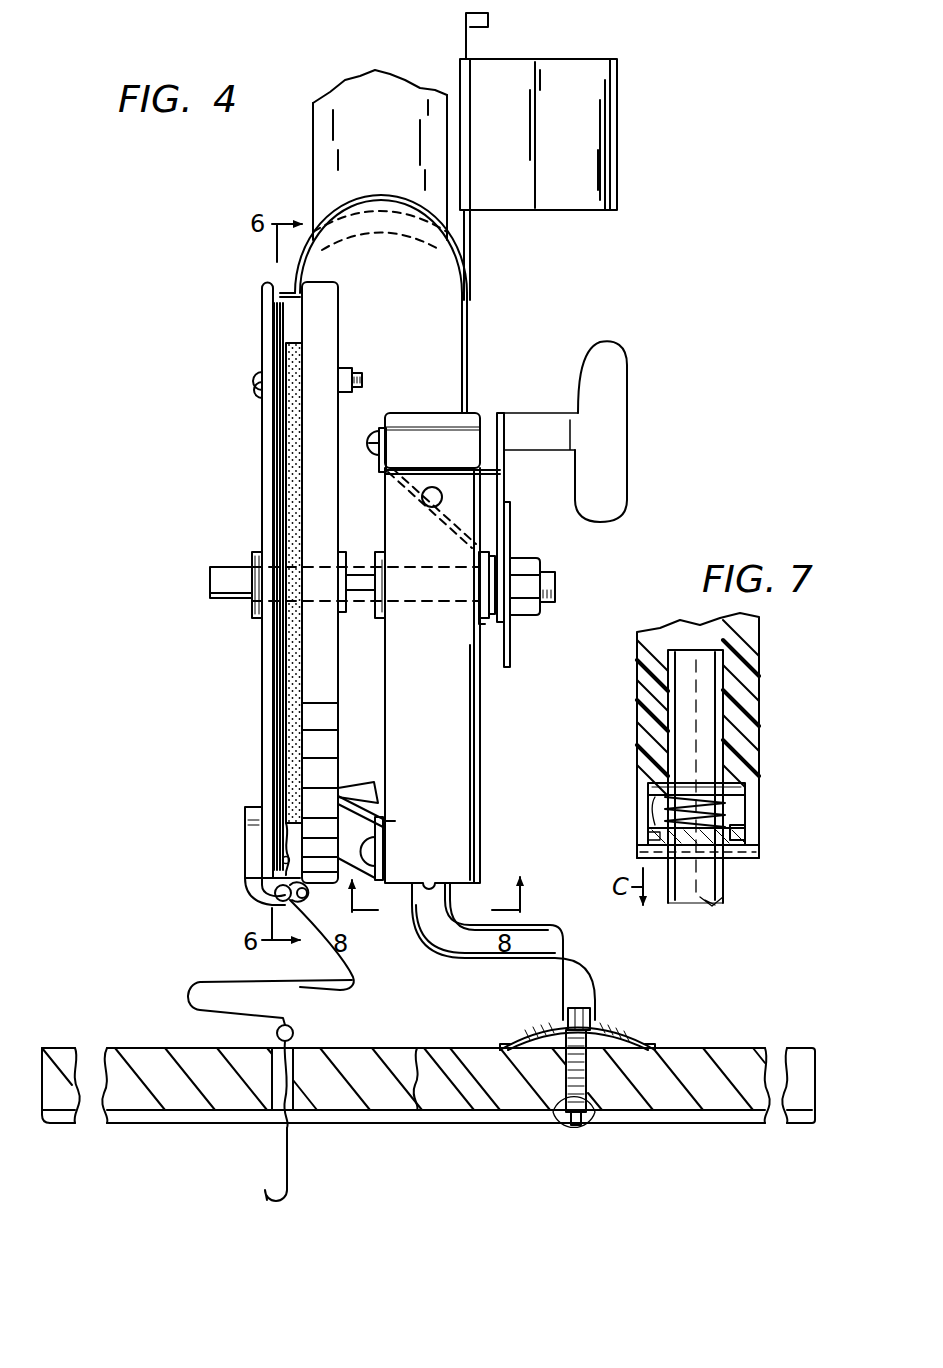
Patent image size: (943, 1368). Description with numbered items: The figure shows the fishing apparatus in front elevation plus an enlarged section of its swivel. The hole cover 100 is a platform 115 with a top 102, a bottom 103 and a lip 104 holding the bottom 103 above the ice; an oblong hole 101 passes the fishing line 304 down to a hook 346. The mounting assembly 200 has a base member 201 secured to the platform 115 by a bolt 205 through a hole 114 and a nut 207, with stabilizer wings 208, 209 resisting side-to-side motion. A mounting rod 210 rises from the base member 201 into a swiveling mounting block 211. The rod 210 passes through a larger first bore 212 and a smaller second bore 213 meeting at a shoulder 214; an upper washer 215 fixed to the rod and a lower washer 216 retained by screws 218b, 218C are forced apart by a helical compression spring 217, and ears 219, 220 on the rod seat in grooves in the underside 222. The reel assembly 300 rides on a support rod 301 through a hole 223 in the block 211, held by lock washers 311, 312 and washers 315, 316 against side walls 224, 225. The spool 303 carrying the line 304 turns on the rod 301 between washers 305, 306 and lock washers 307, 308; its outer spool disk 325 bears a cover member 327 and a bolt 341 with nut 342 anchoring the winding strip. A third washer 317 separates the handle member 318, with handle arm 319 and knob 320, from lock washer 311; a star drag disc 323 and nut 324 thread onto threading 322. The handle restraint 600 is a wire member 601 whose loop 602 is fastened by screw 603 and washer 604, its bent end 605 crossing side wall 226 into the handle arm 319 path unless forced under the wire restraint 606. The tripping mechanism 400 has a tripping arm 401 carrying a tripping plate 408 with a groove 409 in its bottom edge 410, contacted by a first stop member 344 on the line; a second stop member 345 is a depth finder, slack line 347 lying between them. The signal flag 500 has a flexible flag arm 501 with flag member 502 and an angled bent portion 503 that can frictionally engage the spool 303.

In FIG. 4, the hole cover 100 is at (743, 1120).
In FIG. 4, the hole 101 is at (280, 1093).
In FIG. 4, the top 102 is at (110, 1045).
In FIG. 4, the bottom 103 is at (118, 1120).
In FIG. 4, the lip 104 is at (793, 1125).
In FIG. 4, the hole 114 is at (560, 1100).
In FIG. 4, the platform 115 is at (638, 1112).
In FIG. 4, the mounting assembly 200 is at (490, 733).
In FIG. 4, the base member 201 is at (527, 1033).
In FIG. 4, the bolt 205 is at (567, 1122).
In FIG. 4, the nut 207 is at (567, 1023).
In FIG. 4, the stabilizer wing 208 is at (632, 1042).
In FIG. 4, the stabilizer wing 209 is at (512, 1045).
In FIG. 4, the mounting rod 210 is at (593, 980).
In FIG. 7, the mounting rod 210 is at (707, 907).
In FIG. 4, the mounting block 211 is at (440, 697).
In FIG. 7, the mounting block 211 is at (642, 630).
In FIG. 7, the first bore 212 is at (657, 802).
In FIG. 7, the second bore 213 is at (727, 657).
In FIG. 7, the shoulder 214 is at (730, 783).
In FIG. 7, the first washer 215 is at (733, 788).
In FIG. 7, the second washer 216 is at (647, 832).
In FIG. 7, the helical compression spring 217 is at (662, 797).
In FIG. 7, the screw 218b is at (640, 838).
In FIG. 7, the screw 218C is at (757, 833).
In FIG. 7, the ear 219 is at (653, 853).
In FIG. 7, the ear 220 is at (740, 852).
In FIG. 7, the underside 222 is at (750, 843).
In FIG. 4, the hole 223 is at (457, 560).
In FIG. 4, the side wall 224 is at (480, 808).
In FIG. 4, the side wall 225 is at (372, 662).
In FIG. 4, the side wall 226 is at (457, 742).
In FIG. 4, the reel assembly 300 is at (213, 605).
In FIG. 4, the support rod 301 is at (210, 585).
In FIG. 4, the spool 303 is at (250, 405).
In FIG. 4, the fishing line 304 is at (300, 987).
In FIG. 4, the washer 305 is at (255, 558).
In FIG. 4, the washer 306 is at (340, 625).
In FIG. 4, the first lock washer 307 is at (358, 610).
In FIG. 4, the second lock washer 308 is at (252, 562).
In FIG. 4, the lock washer 311 is at (556, 603).
In FIG. 4, the lock washer 312 is at (372, 618).
In FIG. 4, the first washer 315 is at (483, 625).
In FIG. 4, the second washer 316 is at (386, 510).
In FIG. 4, the third washer 317 is at (490, 617).
In FIG. 4, the handle member 318 is at (538, 392).
In FIG. 4, the handle arm 319 is at (505, 493).
In FIG. 4, the knob 320 is at (615, 383).
In FIG. 4, the threading 322 is at (542, 582).
In FIG. 4, the star drag disc 323 is at (512, 522).
In FIG. 4, the nut 324 is at (548, 556).
In FIG. 4, the outer spool disk 325 is at (262, 320).
In FIG. 4, the cover member 327 is at (325, 283).
In FIG. 4, the bolt 341 is at (256, 380).
In FIG. 4, the nut 342 is at (348, 367).
In FIG. 4, the first stop member 344 is at (270, 885).
In FIG. 4, the second stop member 345 is at (294, 1033).
In FIG. 4, the hook 346 is at (293, 1190).
In FIG. 4, the slack line 347 is at (186, 1000).
In FIG. 4, the tripping mechanism 400 is at (358, 772).
In FIG. 4, the tripping arm 401 is at (383, 820).
In FIG. 4, the tripping plate 408 is at (245, 830).
In FIG. 4, the cutout groove 409 is at (303, 900).
In FIG. 4, the bottom edge 410 is at (273, 895).
In FIG. 4, the signal flag 500 is at (497, 245).
In FIG. 4, the flag arm 501 is at (472, 288).
In FIG. 4, the flag member 502 is at (583, 172).
In FIG. 4, the angled bent portion 503 is at (488, 20).
In FIG. 4, the handle restraint 600 is at (425, 430).
In FIG. 4, the wire member 601 is at (478, 463).
In FIG. 4, the loop 602 is at (385, 440).
In FIG. 4, the screw 603 is at (367, 443).
In FIG. 4, the washer 604 is at (381, 426).
In FIG. 4, the end 605 is at (507, 477).
In FIG. 4, the wire restraint 606 is at (428, 505).